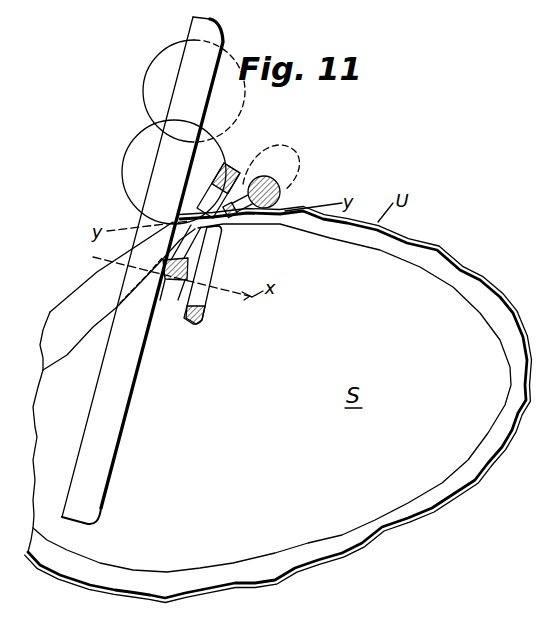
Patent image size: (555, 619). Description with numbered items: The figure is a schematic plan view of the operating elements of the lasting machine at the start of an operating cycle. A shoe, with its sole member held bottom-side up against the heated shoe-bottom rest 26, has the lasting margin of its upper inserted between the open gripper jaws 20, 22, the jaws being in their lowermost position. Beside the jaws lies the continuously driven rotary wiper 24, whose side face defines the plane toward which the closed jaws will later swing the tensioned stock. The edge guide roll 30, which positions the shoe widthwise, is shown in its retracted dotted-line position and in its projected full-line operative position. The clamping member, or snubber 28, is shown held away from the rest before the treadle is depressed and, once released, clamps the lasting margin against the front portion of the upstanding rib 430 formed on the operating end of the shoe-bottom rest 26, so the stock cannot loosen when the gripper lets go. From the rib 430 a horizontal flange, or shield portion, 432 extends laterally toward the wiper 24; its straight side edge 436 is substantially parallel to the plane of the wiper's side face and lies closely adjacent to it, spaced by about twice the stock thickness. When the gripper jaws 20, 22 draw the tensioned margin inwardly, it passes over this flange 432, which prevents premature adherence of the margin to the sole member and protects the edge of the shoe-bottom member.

The gripper jaw 20 is at (207, 195).
The gripper jaw 22 is at (160, 300).
The rotary wiper 24 is at (116, 455).
The shoe-bottom rest 26 is at (212, 285).
The snubber 28 is at (243, 182).
The edge guide roll 30 is at (145, 88).
The upstanding rib 430 is at (224, 233).
The flange or shield portion 432 is at (182, 318).
The side edge of flange 436 is at (160, 232).